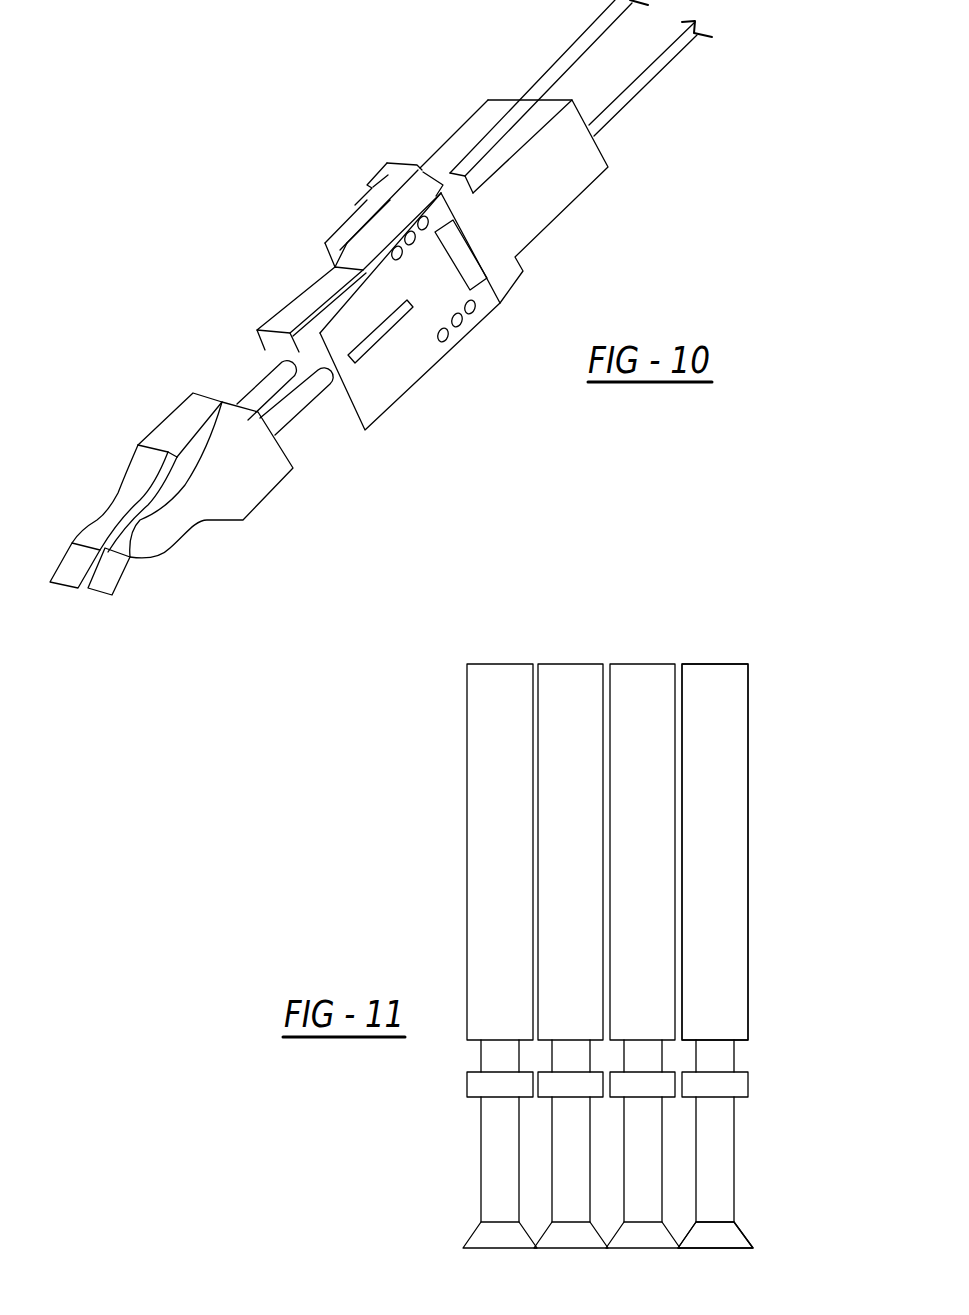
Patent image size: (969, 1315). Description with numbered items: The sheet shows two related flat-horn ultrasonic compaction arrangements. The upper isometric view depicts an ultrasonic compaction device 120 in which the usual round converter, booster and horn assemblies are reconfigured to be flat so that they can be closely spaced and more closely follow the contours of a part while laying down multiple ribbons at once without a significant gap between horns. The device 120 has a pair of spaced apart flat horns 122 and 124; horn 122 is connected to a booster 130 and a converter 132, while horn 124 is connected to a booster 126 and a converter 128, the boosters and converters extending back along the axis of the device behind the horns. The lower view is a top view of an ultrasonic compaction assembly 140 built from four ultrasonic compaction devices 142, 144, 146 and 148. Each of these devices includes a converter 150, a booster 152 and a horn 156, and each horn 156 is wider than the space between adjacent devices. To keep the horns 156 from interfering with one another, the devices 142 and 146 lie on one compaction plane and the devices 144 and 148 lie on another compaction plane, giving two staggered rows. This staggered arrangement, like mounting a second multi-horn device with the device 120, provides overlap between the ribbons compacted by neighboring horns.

In FIG. 10, the ultrasonic compaction device 120 is at (315, 73).
In FIG. 10, the flat horn 122 is at (108, 522).
In FIG. 10, the flat horn 124 is at (160, 547).
In FIG. 10, the booster 126 is at (383, 362).
In FIG. 10, the converter 128 is at (542, 192).
In FIG. 10, the booster 130 is at (318, 290).
In FIG. 10, the converter 132 is at (458, 135).
In FIG. 11, the ultrasonic compaction assembly 140 is at (800, 575).
In FIG. 11, the ultrasonic compaction device 142 is at (502, 652).
In FIG. 11, the ultrasonic compaction device 144 is at (561, 647).
In FIG. 11, the ultrasonic compaction device 146 is at (647, 650).
In FIG. 11, the ultrasonic compaction device 148 is at (712, 648).
In FIG. 11, the converter 150 is at (720, 865).
In FIG. 11, the booster 152 is at (740, 1083).
In FIG. 11, the horn 156 is at (727, 1240).